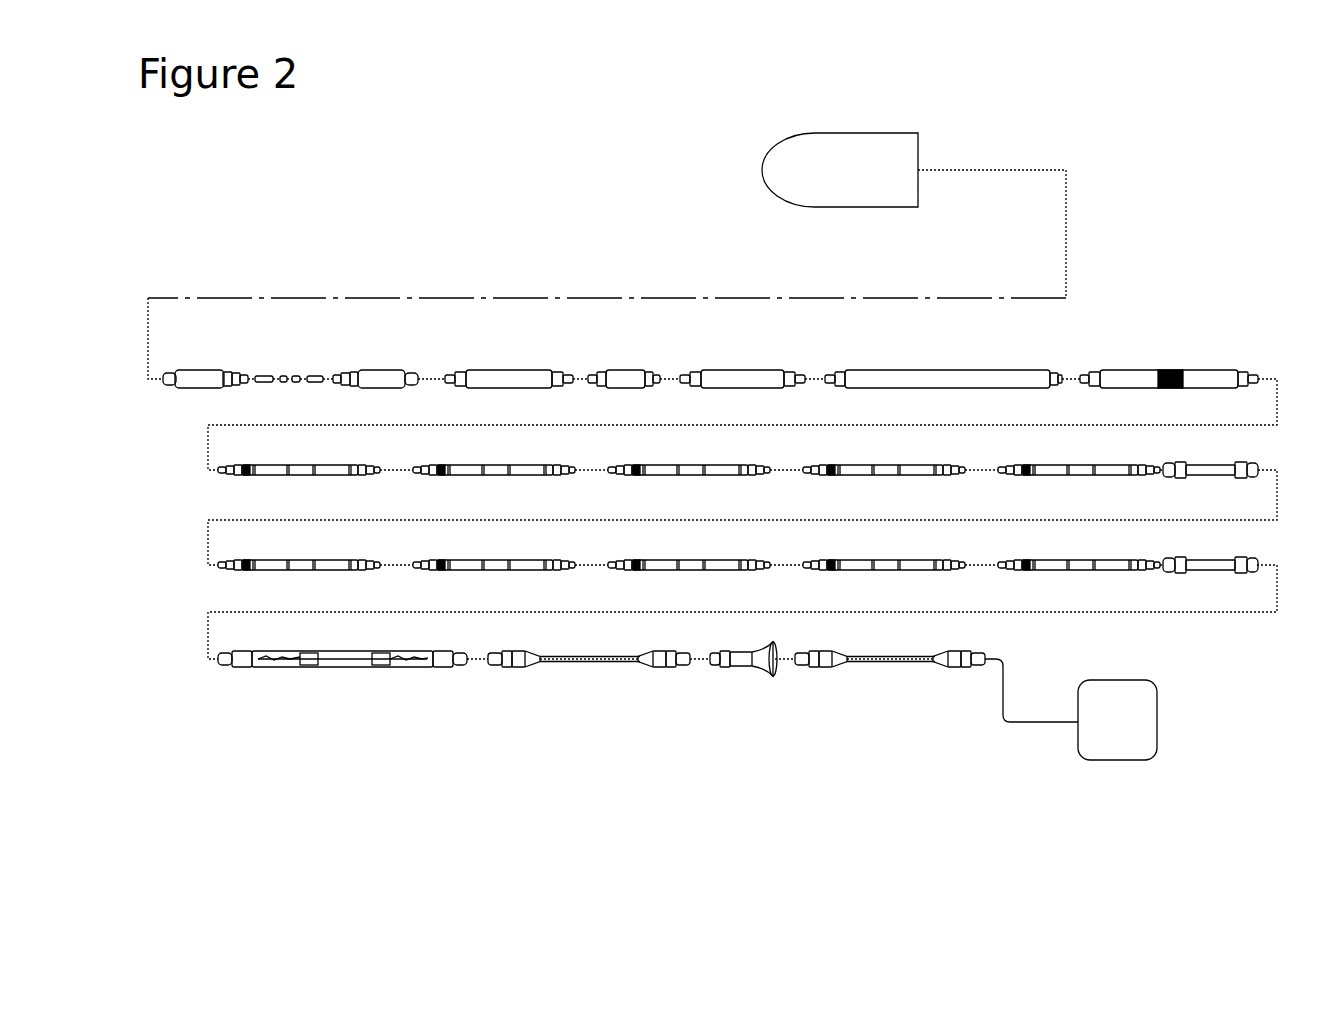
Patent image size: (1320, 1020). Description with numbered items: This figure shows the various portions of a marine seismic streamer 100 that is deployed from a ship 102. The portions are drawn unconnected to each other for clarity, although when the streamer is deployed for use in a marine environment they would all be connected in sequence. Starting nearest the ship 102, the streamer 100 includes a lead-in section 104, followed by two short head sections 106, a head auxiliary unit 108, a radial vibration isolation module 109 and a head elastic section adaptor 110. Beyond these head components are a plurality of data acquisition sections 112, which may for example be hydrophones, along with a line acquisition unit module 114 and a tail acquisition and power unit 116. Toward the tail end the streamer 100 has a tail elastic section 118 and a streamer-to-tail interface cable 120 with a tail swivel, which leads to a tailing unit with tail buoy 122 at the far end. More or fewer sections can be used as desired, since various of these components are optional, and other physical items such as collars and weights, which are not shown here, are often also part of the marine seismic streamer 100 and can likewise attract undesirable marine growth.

The marine seismic streamer 100 is at (421, 255).
The ship 102 is at (858, 133).
The lead-in section 104 is at (376, 369).
The short head section 106 is at (480, 372).
The head auxiliary unit 108 is at (615, 372).
The radial vibration isolation module 109 is at (923, 372).
The head elastic section adaptor 110 is at (1137, 372).
The data acquisition section 112 is at (272, 465).
The line acquisition unit module 114 is at (1236, 464).
The tail acquisition and power unit 116 is at (1234, 559).
The tail elastic section 118 is at (322, 651).
The streamer-to-tail interface cable 120 is at (875, 660).
The tailing unit with tail buoy 122 is at (1115, 761).